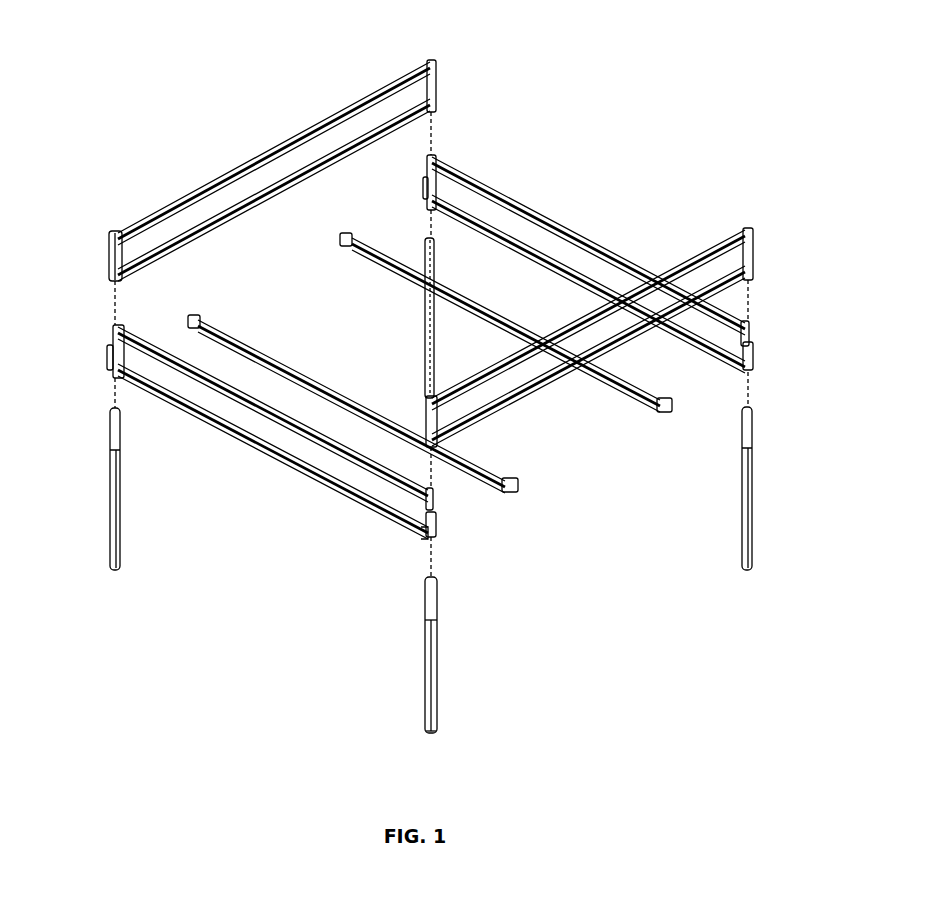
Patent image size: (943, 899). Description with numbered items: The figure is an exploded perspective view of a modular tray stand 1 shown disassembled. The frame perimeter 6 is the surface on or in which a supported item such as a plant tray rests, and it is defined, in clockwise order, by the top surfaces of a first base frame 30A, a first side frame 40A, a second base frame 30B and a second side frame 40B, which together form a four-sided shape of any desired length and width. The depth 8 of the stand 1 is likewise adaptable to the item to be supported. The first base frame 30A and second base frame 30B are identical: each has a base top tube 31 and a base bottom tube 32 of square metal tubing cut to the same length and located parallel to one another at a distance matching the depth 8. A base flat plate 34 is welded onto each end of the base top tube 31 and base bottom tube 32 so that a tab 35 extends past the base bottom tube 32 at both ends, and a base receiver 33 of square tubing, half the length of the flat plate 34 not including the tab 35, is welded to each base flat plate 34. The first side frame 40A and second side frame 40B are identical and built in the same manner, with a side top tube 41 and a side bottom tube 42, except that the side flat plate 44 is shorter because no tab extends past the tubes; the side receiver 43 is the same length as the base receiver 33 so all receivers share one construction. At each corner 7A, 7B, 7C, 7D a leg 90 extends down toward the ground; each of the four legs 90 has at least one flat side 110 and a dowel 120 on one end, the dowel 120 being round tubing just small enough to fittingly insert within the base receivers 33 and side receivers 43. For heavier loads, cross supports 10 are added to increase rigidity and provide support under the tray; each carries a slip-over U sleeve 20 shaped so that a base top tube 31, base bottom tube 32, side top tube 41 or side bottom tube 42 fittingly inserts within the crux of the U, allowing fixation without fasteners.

The stand 1 is at (493, 38).
The frame perimeter 6 is at (143, 332).
The corner 7A is at (111, 229).
The corner 7B is at (428, 61).
The corner 7C is at (746, 228).
The corner 7D is at (425, 397).
The depth 8 is at (120, 275).
The cross support 10 is at (238, 336).
The U sleeve 20 is at (512, 493).
The first base frame 30A is at (302, 454).
The second base frame 30B is at (547, 197).
The base top tube 31 is at (195, 378).
The base bottom tube 32 is at (267, 447).
The base receiver 33 is at (423, 520).
The base flat plate 34 is at (438, 498).
The tab 35 is at (108, 377).
The first side frame 40A is at (299, 170).
The second side frame 40B is at (589, 355).
The side top tube 41 is at (620, 306).
The side bottom tube 42 is at (518, 403).
The side receiver 43 is at (440, 76).
The side flat plate 44 is at (423, 85).
The leg 90 is at (479, 673).
The flat side 110 is at (440, 730).
The dowel 120 is at (438, 596).